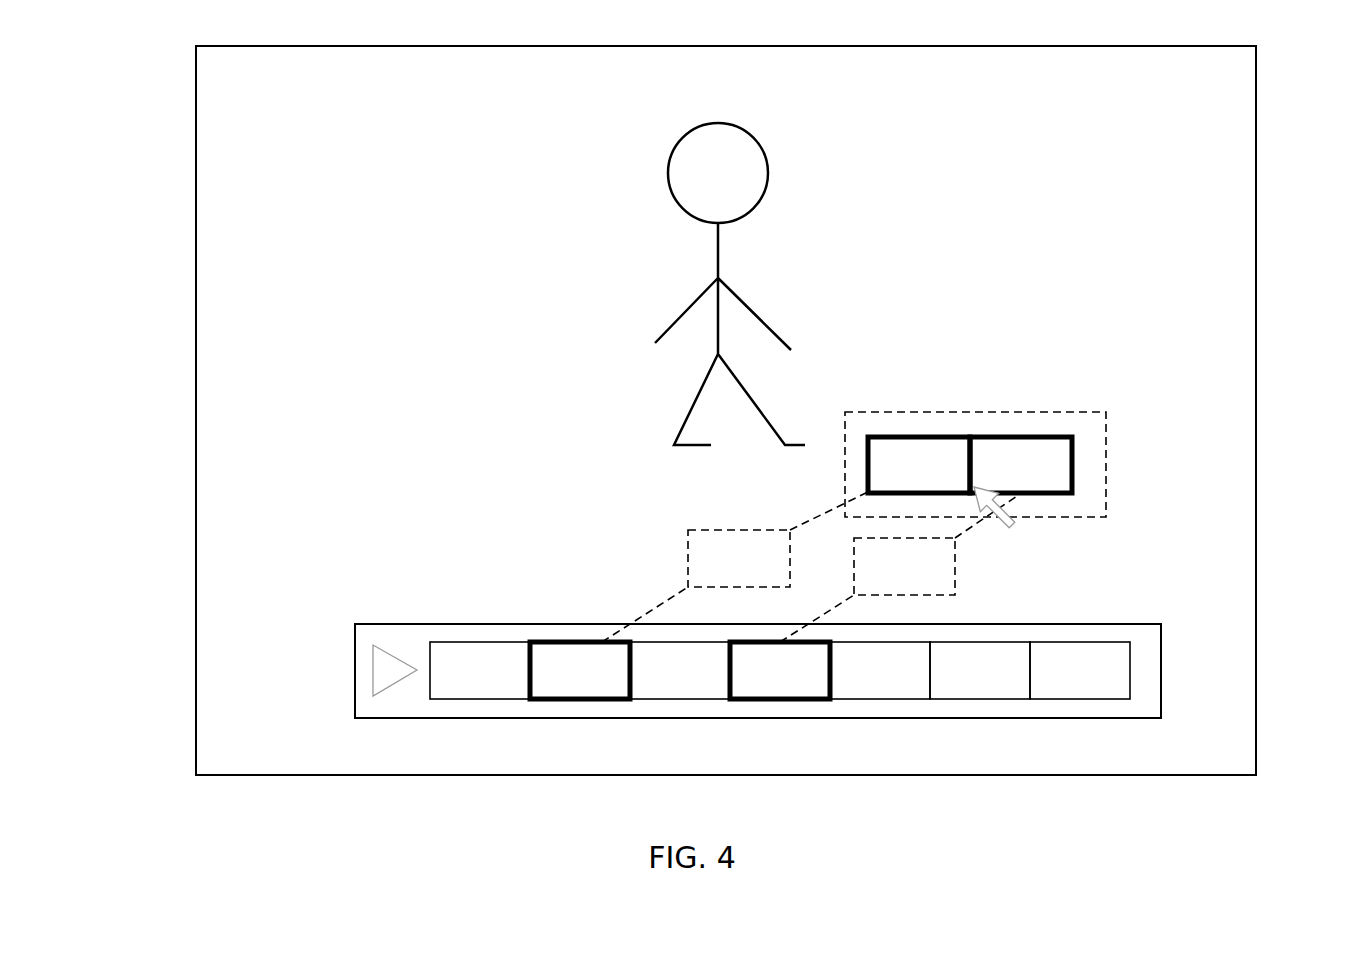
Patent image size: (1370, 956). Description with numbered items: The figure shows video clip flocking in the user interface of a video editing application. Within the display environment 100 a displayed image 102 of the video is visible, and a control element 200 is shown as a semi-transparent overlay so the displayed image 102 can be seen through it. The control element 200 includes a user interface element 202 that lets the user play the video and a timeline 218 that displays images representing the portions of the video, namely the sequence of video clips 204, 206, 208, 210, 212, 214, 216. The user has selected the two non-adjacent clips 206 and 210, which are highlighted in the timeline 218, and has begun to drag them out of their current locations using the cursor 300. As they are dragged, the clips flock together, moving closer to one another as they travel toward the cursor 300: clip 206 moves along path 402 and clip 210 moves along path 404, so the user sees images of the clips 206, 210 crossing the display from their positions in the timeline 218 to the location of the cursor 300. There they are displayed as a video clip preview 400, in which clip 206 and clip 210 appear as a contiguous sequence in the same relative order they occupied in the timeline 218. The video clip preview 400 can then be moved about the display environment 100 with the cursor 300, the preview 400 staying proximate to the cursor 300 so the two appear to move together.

The display environment 100 is at (180, 170).
The displayed image 102 is at (576, 272).
The control element 200 is at (452, 617).
The user interface element 202 is at (364, 669).
The video clip 204 is at (480, 670).
The video clip 206 is at (580, 670).
The video clip 208 is at (680, 670).
The video clip 210 is at (780, 670).
The video clip 212 is at (880, 670).
The video clip 214 is at (980, 670).
The video clip 216 is at (1080, 670).
The timeline 218 is at (889, 682).
The cursor 300 is at (1021, 530).
The video clip preview 400 is at (997, 389).
The path 402 is at (809, 508).
The path 404 is at (847, 612).